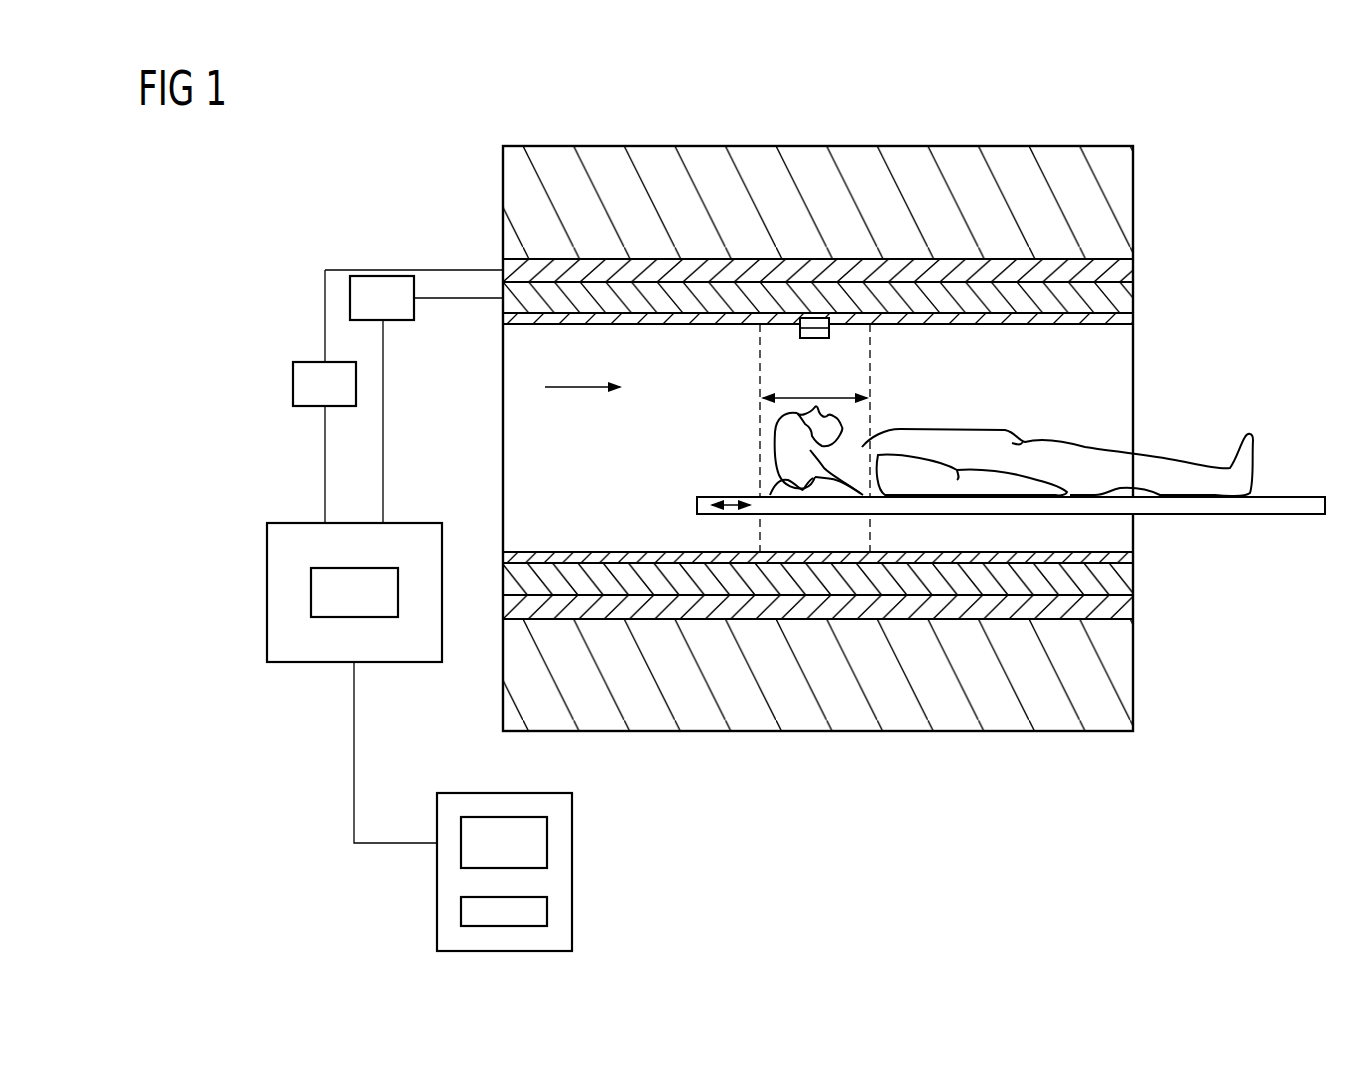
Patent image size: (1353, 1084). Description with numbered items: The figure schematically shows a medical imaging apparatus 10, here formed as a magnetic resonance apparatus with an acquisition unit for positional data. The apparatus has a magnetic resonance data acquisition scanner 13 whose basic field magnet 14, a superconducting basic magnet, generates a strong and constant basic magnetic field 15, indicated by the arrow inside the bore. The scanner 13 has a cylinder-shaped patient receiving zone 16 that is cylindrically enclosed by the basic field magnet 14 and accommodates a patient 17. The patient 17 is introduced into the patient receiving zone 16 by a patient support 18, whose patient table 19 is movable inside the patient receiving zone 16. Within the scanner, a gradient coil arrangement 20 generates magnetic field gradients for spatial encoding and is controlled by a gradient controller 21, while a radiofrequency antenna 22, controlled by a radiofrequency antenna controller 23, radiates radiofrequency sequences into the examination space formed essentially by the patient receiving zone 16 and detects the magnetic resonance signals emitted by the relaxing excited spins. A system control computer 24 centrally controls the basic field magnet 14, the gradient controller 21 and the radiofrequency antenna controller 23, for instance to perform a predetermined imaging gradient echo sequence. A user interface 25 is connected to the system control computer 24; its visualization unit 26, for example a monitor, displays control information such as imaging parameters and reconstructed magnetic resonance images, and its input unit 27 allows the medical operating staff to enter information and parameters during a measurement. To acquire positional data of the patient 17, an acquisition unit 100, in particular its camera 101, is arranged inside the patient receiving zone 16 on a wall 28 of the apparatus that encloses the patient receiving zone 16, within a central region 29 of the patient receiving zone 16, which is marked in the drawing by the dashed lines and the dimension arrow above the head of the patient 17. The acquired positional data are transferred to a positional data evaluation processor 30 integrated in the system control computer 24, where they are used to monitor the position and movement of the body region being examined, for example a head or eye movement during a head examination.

The medical imaging apparatus 10 is at (436, 102).
The magnetic resonance data acquisition scanner 13 is at (949, 141).
The basic field magnet 14 is at (1117, 203).
The gradient coil arrangement 20 is at (1117, 272).
The radiofrequency antenna 22 is at (1117, 298).
The patient receiving zone 16 is at (1107, 358).
The wall 28 is at (598, 558).
The basic magnetic field 15 is at (578, 385).
The central region 29 is at (815, 395).
The acquisition unit 100 is at (817, 312).
The camera 101 is at (800, 326).
The patient table 19 is at (1298, 507).
The patient support 18 is at (1168, 537).
The patient 17 is at (980, 457).
The radiofrequency antenna controller 23 is at (403, 325).
The gradient controller 21 is at (293, 386).
The system control computer 24 is at (267, 548).
The positional data evaluation processor 30 is at (311, 595).
The user interface 25 is at (430, 886).
The visualization unit 26 is at (547, 838).
The input unit 27 is at (547, 908).